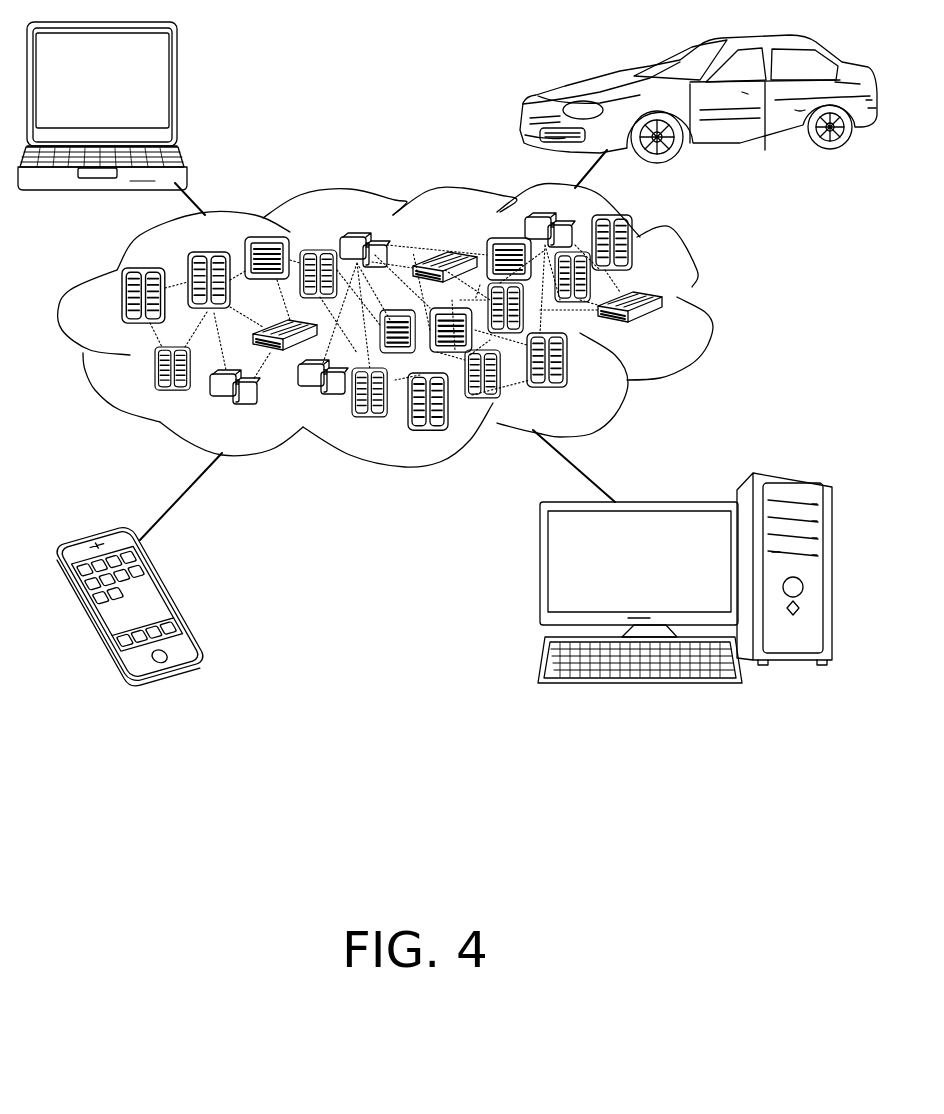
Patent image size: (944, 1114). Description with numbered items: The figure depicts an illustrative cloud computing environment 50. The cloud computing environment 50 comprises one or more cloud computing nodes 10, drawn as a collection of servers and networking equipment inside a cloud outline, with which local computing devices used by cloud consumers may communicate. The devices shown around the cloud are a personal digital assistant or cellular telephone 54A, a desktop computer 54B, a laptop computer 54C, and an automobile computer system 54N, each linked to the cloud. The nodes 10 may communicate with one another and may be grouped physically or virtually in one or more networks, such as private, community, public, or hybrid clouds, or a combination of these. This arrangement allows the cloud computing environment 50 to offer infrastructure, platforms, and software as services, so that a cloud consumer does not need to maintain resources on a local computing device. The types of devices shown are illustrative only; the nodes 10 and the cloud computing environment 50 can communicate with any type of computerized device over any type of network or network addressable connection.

The cloud computing node 10 is at (661, 321).
The cloud computing environment 50 is at (414, 325).
The personal digital assistant or cellular telephone 54A is at (153, 593).
The desktop computer 54B is at (698, 500).
The laptop computer 54C is at (160, 101).
The automobile computer system 54N is at (525, 106).